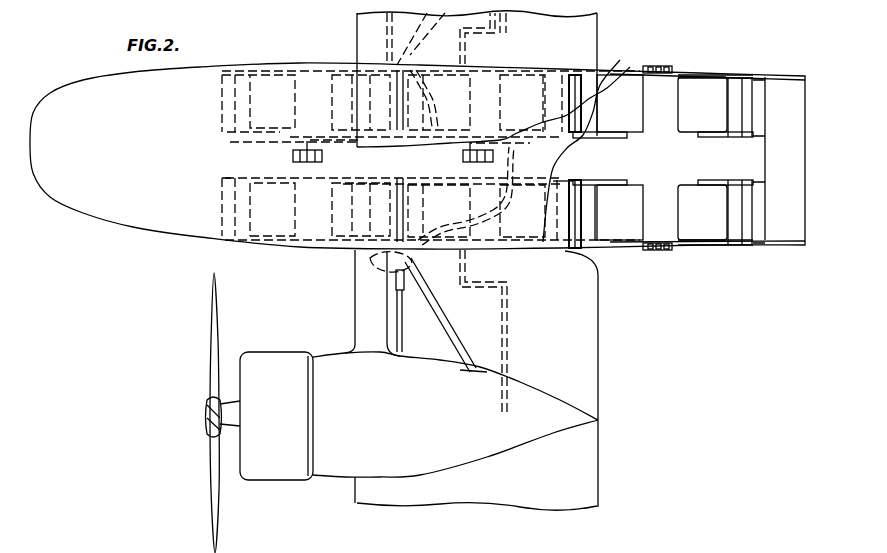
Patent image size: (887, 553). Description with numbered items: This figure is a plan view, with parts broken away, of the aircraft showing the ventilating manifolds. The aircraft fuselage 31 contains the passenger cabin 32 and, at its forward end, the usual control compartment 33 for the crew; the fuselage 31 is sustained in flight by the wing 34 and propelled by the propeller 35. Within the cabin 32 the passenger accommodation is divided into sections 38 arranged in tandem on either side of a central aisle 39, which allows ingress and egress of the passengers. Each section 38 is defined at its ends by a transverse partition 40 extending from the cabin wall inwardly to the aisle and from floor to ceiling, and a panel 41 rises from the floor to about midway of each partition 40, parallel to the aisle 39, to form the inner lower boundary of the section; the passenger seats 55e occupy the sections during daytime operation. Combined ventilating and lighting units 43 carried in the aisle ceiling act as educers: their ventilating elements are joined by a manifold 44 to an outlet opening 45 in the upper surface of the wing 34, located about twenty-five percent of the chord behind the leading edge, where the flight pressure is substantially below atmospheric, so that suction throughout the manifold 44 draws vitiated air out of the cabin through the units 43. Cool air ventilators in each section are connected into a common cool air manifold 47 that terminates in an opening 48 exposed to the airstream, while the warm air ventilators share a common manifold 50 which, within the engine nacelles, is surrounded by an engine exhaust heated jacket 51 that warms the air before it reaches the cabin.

The aircraft fuselage 31 is at (258, 64).
The passenger cabin 32 is at (392, 157).
The control compartment 33 is at (417, 156).
The wing 34 is at (597, 357).
The propeller 35 is at (402, 413).
The section 38 is at (661, 148).
The central aisle 39 is at (709, 160).
The transverse partition 40 is at (578, 207).
The panel 41 is at (590, 182).
The combined ventilating and lighting unit 43 is at (325, 157).
The manifold 44 is at (396, 146).
The outlet opening 45 is at (401, 309).
The cool air manifold 47 is at (651, 67).
The opening 48 is at (368, 265).
The common manifold 50 is at (527, 64).
The engine exhaust heated jacket 51 is at (480, 293).
The passenger seat 55e is at (715, 212).